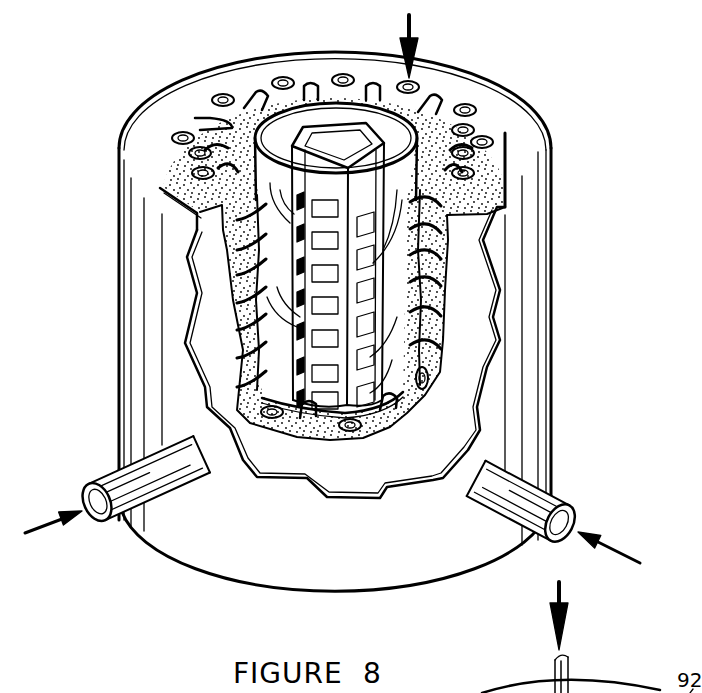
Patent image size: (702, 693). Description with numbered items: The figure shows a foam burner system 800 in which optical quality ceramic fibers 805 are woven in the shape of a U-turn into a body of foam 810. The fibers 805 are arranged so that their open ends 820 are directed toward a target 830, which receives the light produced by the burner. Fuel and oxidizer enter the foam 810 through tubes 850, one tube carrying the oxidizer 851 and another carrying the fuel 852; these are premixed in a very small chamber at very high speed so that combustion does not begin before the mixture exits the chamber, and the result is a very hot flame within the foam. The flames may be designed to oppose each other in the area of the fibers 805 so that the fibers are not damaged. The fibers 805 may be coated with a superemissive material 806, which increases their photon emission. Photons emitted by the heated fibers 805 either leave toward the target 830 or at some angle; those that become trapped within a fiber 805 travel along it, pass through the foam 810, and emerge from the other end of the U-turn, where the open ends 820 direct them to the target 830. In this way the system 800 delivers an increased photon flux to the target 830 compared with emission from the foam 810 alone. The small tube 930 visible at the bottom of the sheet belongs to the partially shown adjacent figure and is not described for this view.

In FIG. 8, the foam burner system 800 is at (578, 123).
In FIG. 8, the fibers 805 is at (309, 80).
In FIG. 8, the superemissive material 806 is at (414, 160).
In FIG. 8, the foam 810 is at (487, 150).
In FIG. 8, the open ends 820 is at (237, 197).
In FIG. 8, the target 830 is at (360, 294).
In FIG. 8, the tubes 850 is at (285, 76).
In FIG. 8, the oxidizer 851 is at (35, 532).
In FIG. 8, the fuel 852 is at (413, 78).
In FIG. 9, the tube 930 is at (625, 692).